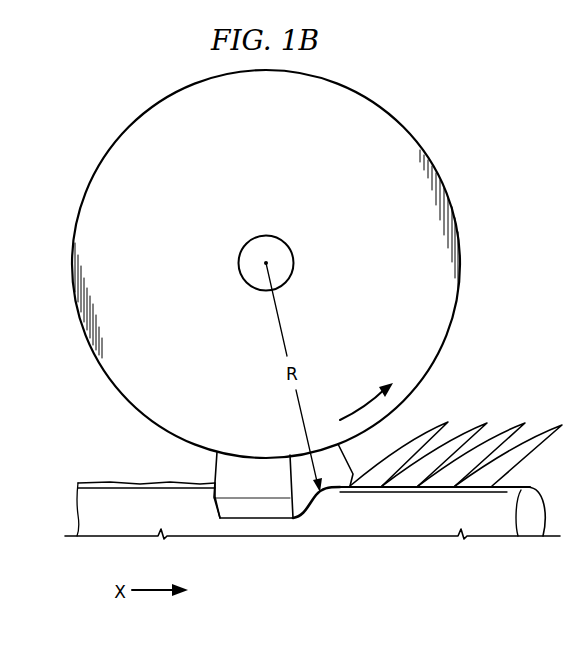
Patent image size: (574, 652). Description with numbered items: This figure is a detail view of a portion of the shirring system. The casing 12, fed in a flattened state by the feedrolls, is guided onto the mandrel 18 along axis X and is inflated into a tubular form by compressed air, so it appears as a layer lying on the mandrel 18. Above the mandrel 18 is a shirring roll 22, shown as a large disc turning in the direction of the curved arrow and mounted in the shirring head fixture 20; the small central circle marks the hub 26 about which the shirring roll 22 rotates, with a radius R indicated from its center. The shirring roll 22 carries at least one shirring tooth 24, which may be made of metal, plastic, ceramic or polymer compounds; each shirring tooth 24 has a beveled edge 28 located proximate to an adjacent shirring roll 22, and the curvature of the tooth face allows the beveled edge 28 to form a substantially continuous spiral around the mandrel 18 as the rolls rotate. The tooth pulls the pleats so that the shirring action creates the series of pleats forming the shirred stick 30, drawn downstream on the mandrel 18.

The casing 12 is at (118, 482).
The mandrel 18 is at (415, 536).
The shirring head fixture 20 is at (367, 83).
The shirring roll 22 is at (388, 250).
The shirring tooth 24 is at (255, 487).
The wheel axis / hub 26 is at (240, 262).
The beveled edge 28 is at (272, 510).
The shirred stick 30 is at (516, 409).